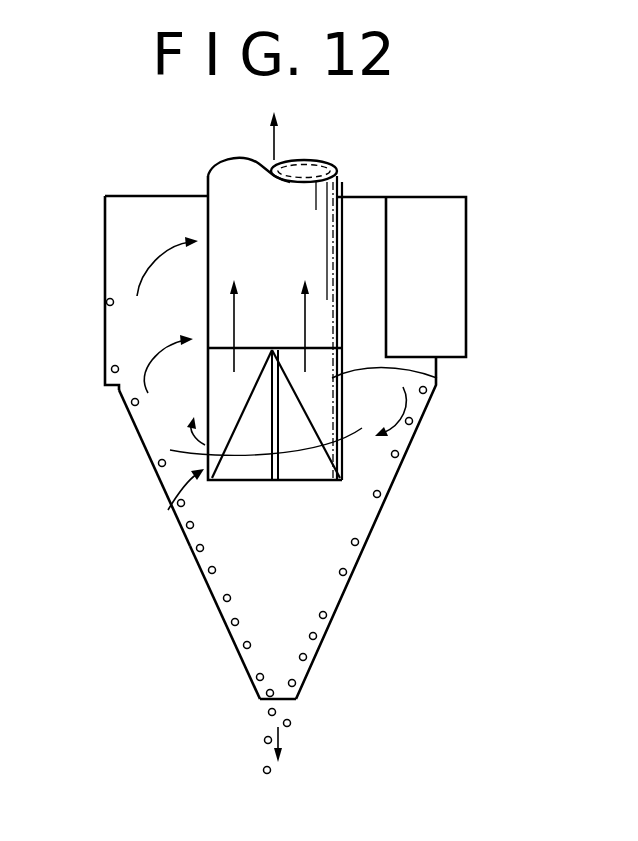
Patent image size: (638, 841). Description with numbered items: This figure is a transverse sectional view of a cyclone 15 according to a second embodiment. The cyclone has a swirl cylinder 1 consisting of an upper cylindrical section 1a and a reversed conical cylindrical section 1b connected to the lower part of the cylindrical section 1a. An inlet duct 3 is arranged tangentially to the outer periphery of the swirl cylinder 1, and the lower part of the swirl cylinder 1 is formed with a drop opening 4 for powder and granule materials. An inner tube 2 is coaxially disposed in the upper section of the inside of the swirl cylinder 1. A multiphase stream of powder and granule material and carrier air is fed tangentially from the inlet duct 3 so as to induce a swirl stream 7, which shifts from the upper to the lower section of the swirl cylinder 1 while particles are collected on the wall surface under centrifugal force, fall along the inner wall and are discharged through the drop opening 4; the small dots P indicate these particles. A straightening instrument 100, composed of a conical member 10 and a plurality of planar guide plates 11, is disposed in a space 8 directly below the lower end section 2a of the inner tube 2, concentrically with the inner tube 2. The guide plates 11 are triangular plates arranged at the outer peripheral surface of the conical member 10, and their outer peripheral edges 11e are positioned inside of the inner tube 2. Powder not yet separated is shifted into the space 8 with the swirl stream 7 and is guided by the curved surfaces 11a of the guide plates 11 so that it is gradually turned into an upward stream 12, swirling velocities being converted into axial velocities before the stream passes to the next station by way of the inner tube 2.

The swirl cylinder 1 is at (105, 320).
The cylindrical section 1a is at (104, 212).
The reversed conical cylindrical section 1b is at (143, 438).
The inner tube 2 is at (208, 222).
The lower end section of the inner tube 2a is at (207, 382).
The inlet duct 3 is at (467, 245).
The drop opening 4 is at (288, 701).
The swirl stream 7 is at (249, 456).
The space 8 is at (206, 437).
The conical member 10 is at (307, 410).
The planar guide plates 11 is at (275, 470).
The curved surfaces of the planar guide plates 11a is at (437, 378).
The outer peripheral edges of the planar guide plates 11e is at (208, 350).
The upward stream 12 is at (307, 310).
The cyclone 15 is at (218, 633).
The straightening instrument 100 is at (188, 482).
The particles P is at (352, 569).